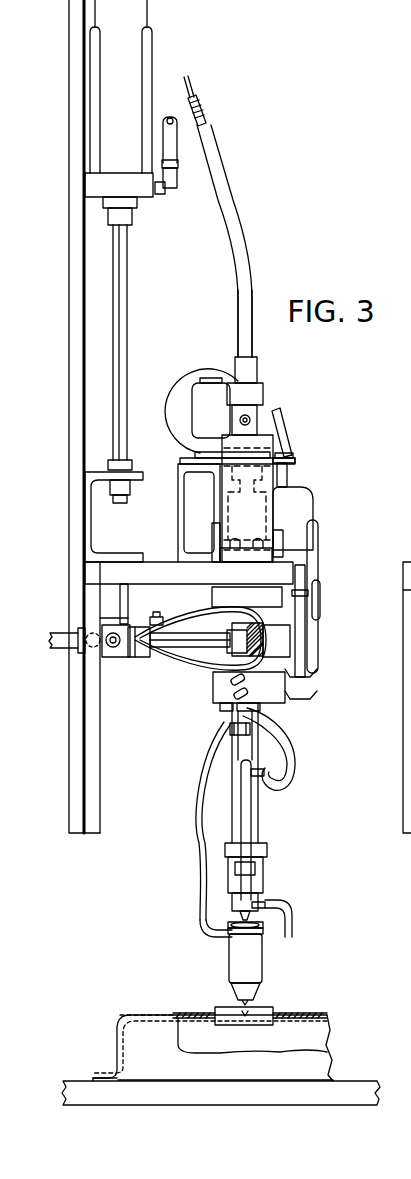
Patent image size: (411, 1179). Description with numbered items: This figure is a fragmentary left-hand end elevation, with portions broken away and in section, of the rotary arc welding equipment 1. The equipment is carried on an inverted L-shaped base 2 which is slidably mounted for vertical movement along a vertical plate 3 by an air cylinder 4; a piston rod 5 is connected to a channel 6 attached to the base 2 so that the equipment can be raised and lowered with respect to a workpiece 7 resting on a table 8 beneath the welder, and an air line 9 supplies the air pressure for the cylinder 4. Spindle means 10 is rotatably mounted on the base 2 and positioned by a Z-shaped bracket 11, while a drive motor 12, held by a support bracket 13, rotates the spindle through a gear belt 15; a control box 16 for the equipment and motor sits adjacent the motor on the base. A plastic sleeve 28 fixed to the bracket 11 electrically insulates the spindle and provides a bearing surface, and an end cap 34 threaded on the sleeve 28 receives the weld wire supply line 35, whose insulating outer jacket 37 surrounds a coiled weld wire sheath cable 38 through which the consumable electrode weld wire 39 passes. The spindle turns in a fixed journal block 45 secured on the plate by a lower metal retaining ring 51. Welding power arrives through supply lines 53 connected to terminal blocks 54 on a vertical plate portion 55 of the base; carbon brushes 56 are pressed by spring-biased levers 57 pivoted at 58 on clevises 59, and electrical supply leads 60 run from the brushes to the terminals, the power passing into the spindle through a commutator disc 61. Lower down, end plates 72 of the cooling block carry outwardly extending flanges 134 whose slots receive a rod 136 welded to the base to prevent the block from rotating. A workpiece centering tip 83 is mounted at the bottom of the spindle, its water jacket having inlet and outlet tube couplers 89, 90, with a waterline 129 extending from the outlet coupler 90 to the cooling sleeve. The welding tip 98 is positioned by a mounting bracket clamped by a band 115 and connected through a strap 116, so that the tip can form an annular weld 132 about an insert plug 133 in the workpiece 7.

The rotary arc welding equipment 1 is at (300, 467).
The base 2 is at (115, 572).
The vertical plate 3 is at (84, 371).
The air cylinder 4 is at (123, 17).
The piston rod 5 is at (121, 272).
The channel 6 is at (96, 487).
The workpiece 7 is at (150, 1023).
The table 8 is at (191, 1092).
The air line 9 is at (168, 135).
The spindle means 10 is at (265, 818).
The Z-shaped bracket 11 is at (264, 535).
The drive motor 12 is at (202, 376).
The support bracket 13 is at (180, 515).
The gear belt 15 is at (297, 462).
The control box 16 is at (298, 507).
The plastic sleeve 28 is at (239, 422).
The end cap 34 is at (249, 370).
The weld wire supply line 35 is at (243, 249).
The outer jacket 37 is at (214, 150).
The weld wire sheath cable 38 is at (201, 108).
The consumable electrode weld wire 39 is at (184, 77).
The journal block 45 is at (280, 541).
The lower metal retaining ring 51 is at (236, 597).
The supply lines 53 is at (63, 648).
The terminal blocks 54 is at (115, 657).
The vertical plate portion 55 is at (93, 772).
The brushes 56 is at (256, 640).
The spring-biased levers 57 is at (186, 648).
The pivot 58 is at (157, 612).
The clevises 59 is at (140, 657).
The electrical supply leads 60 is at (204, 660).
The commutator disc 61 is at (273, 645).
The end plates 72 is at (227, 711).
The workpiece centering tip 83 is at (231, 991).
The inlet tube coupler 89 is at (291, 938).
The outlet tube coupler 90 is at (213, 929).
The welding tip 98 is at (265, 968).
The band 115 is at (266, 850).
The strap 116 is at (256, 872).
The waterline 129 is at (202, 872).
The annular weld 132 is at (276, 1010).
The insert plug 133 is at (259, 1014).
The flanges 134 is at (290, 700).
The rod 136 is at (300, 659).